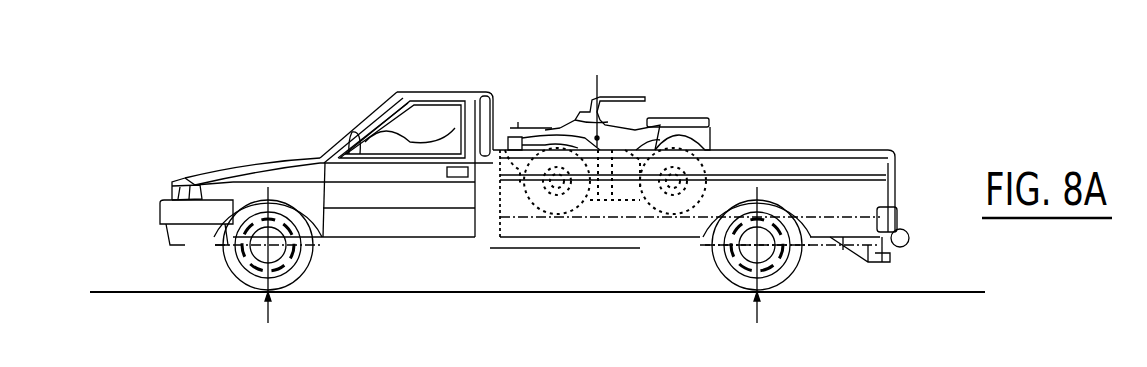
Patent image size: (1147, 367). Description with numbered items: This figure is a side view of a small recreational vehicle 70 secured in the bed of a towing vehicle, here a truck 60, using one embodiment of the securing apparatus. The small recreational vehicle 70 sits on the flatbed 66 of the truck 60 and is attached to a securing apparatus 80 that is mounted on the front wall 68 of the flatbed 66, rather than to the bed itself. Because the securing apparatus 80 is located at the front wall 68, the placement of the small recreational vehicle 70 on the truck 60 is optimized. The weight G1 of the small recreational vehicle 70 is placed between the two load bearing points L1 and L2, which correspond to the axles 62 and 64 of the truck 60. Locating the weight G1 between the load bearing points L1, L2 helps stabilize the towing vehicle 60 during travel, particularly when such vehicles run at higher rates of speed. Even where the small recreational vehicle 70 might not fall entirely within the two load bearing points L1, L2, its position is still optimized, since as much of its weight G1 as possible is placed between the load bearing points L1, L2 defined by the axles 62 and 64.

The truck 60 is at (450, 92).
The axle 62 is at (268, 247).
The axle 64 is at (762, 248).
The flatbed 66 is at (607, 207).
The front wall 68 is at (500, 197).
The small recreational vehicle 70 is at (678, 118).
The securing apparatus 80 is at (500, 122).
The weight G1 is at (599, 80).
The load bearing point L1 is at (267, 318).
The load bearing point L2 is at (757, 308).